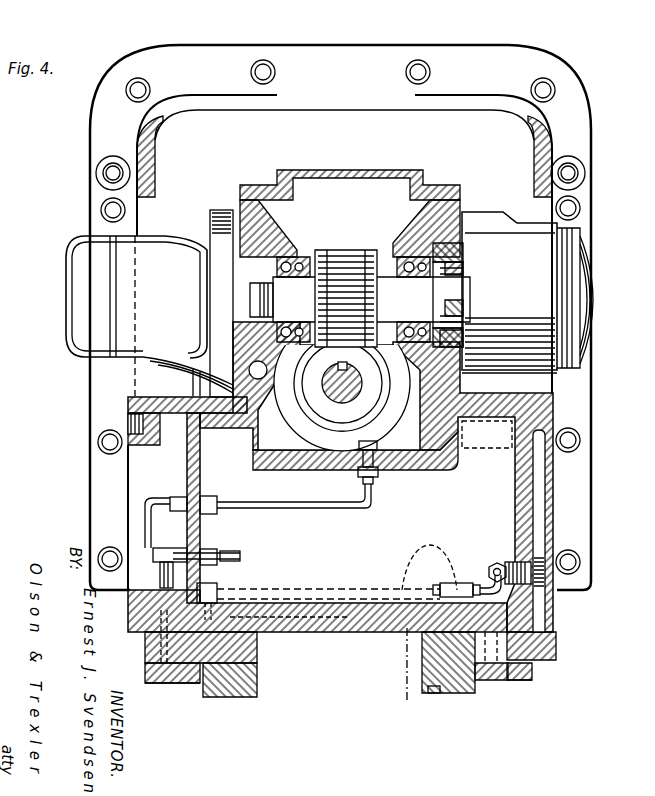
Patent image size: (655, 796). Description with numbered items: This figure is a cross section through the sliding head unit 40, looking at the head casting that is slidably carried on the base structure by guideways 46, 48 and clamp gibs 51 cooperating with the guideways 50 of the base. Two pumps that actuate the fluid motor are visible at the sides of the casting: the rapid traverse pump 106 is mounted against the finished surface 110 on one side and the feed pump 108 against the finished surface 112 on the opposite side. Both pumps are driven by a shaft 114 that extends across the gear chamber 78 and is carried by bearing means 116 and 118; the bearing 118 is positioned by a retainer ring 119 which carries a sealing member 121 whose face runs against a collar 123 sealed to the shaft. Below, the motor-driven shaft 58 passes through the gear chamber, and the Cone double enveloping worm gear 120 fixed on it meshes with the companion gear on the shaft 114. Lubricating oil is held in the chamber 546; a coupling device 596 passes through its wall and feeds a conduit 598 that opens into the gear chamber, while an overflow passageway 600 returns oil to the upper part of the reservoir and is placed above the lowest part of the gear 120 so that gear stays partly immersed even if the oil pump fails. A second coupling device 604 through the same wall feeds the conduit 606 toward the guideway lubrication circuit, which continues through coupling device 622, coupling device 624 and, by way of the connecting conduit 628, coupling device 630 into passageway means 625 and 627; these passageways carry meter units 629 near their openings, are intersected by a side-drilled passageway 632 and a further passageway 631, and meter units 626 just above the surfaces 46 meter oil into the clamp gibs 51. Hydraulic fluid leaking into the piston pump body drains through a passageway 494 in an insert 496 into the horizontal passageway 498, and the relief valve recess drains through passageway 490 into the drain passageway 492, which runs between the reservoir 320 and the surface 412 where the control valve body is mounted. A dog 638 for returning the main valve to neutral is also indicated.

The rapid traverse pump 106 is at (70, 246).
The feed pump 108 is at (572, 232).
The finished surface 110 is at (242, 203).
The finished surface 112 is at (461, 228).
The shaft 114 is at (298, 287).
The bearing means 116 is at (286, 185).
The bearing means 118 is at (418, 256).
The retainer ring 119 is at (447, 243).
The sealing member 121 is at (560, 232).
The collar 123 is at (462, 270).
The passageway 494 is at (452, 338).
The insert 496 is at (462, 316).
The horizontal passageway 498 is at (462, 380).
The outlet or overflow passageway 600 is at (198, 395).
The lubricating oil chamber 546 is at (143, 470).
The gear chamber 78 is at (283, 443).
The shaft 58 is at (333, 410).
The worm gear 120 is at (372, 415).
The coupling device 596 is at (215, 496).
The coupling device 604 is at (210, 552).
The conduit 598 is at (287, 509).
The conduit 606 is at (238, 553).
The coupling device 630 is at (225, 590).
The coupling device 624 is at (457, 588).
The conduit 628 is at (403, 590).
The drain passageway 492 is at (496, 562).
The passageway 490 is at (540, 500).
The coupling device 622 is at (553, 600).
The surface 412 is at (553, 627).
The passageway 631 is at (528, 645).
The passageway means 627 is at (258, 632).
The sliding head unit 40 is at (257, 655).
The passageway 632 is at (255, 668).
The reservoir 320 is at (368, 572).
The passageway means 625 is at (407, 650).
The guideway 46 is at (452, 660).
The meter unit 629 is at (428, 694).
The dog 638 is at (485, 682).
The meter unit 626 is at (525, 670).
The clamp gib 51 is at (143, 682).
The guideway 48 is at (170, 680).
The guideway 50 is at (197, 697).